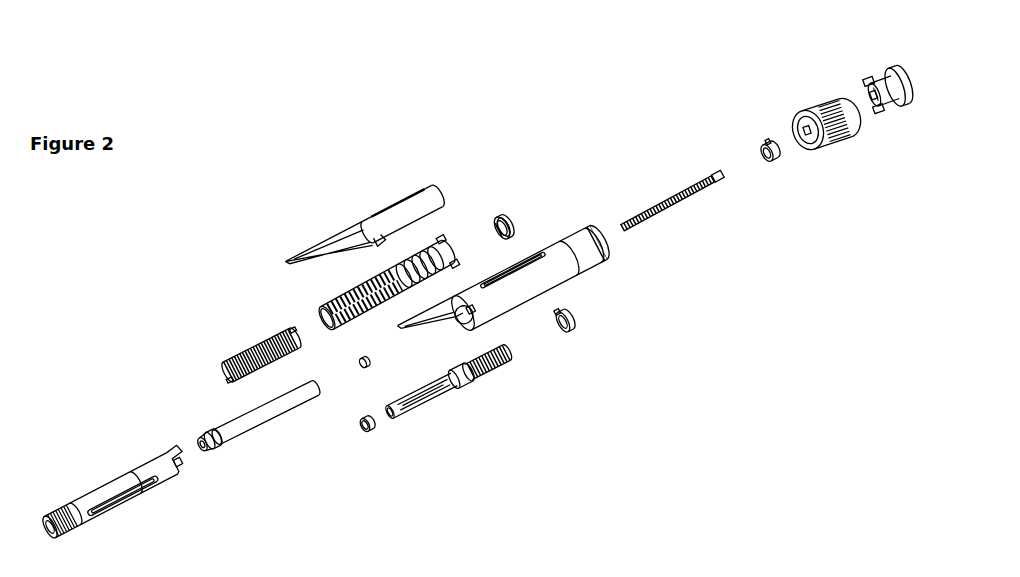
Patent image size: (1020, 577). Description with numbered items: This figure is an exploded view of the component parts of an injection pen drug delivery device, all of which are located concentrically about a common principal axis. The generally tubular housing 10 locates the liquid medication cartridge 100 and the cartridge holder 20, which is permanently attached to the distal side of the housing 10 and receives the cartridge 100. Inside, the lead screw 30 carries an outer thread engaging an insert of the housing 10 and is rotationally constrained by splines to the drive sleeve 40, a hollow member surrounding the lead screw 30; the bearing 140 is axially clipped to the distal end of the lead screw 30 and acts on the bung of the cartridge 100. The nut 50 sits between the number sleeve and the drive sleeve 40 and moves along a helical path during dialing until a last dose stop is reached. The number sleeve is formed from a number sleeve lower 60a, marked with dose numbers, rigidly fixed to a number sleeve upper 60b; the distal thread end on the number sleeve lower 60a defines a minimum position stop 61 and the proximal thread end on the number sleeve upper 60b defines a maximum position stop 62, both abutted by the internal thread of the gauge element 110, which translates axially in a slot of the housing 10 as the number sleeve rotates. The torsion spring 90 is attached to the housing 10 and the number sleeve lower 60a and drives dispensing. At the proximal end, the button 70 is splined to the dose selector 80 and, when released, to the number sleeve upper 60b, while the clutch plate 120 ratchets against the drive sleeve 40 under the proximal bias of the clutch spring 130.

The housing 10 is at (588, 260).
The cartridge holder 20 is at (128, 477).
The lead screw 30 is at (638, 218).
The drive sleeve 40 is at (487, 372).
The nut 50 is at (565, 335).
The number sleeve lower 60a is at (343, 232).
The number sleeve upper 60b is at (499, 217).
The minimum position stop 61 is at (317, 308).
The maximum position stop 62 is at (493, 217).
The button 70 is at (874, 82).
The dose selector 80 is at (806, 110).
The torsion spring 90 is at (233, 347).
The cartridge 100 is at (250, 418).
The gauge element 110 is at (333, 233).
The clutch plate 120 is at (758, 145).
The clutch spring 130 is at (367, 436).
The bearing 140 is at (360, 370).